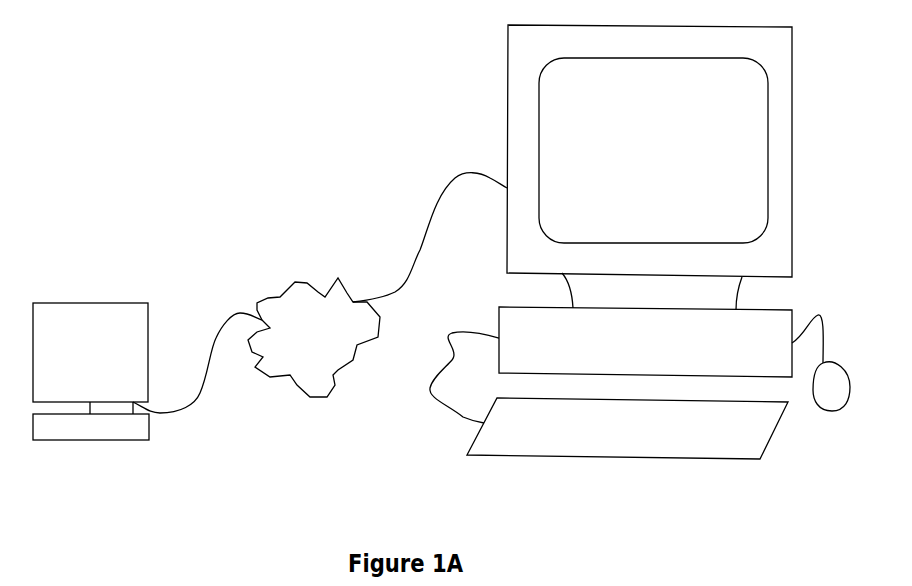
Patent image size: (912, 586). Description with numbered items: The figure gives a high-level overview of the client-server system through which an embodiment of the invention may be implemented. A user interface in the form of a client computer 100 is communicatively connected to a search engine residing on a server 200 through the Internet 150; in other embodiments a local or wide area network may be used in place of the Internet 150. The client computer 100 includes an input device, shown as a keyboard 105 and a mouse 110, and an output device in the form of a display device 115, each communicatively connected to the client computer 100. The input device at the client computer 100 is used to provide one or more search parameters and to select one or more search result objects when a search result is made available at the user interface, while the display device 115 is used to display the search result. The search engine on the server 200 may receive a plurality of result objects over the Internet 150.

The client computer 100 is at (493, 90).
The keyboard 105 is at (702, 443).
The mouse 110 is at (850, 387).
The display device 115 is at (770, 193).
The Internet 150 is at (333, 375).
The server 200 is at (98, 303).